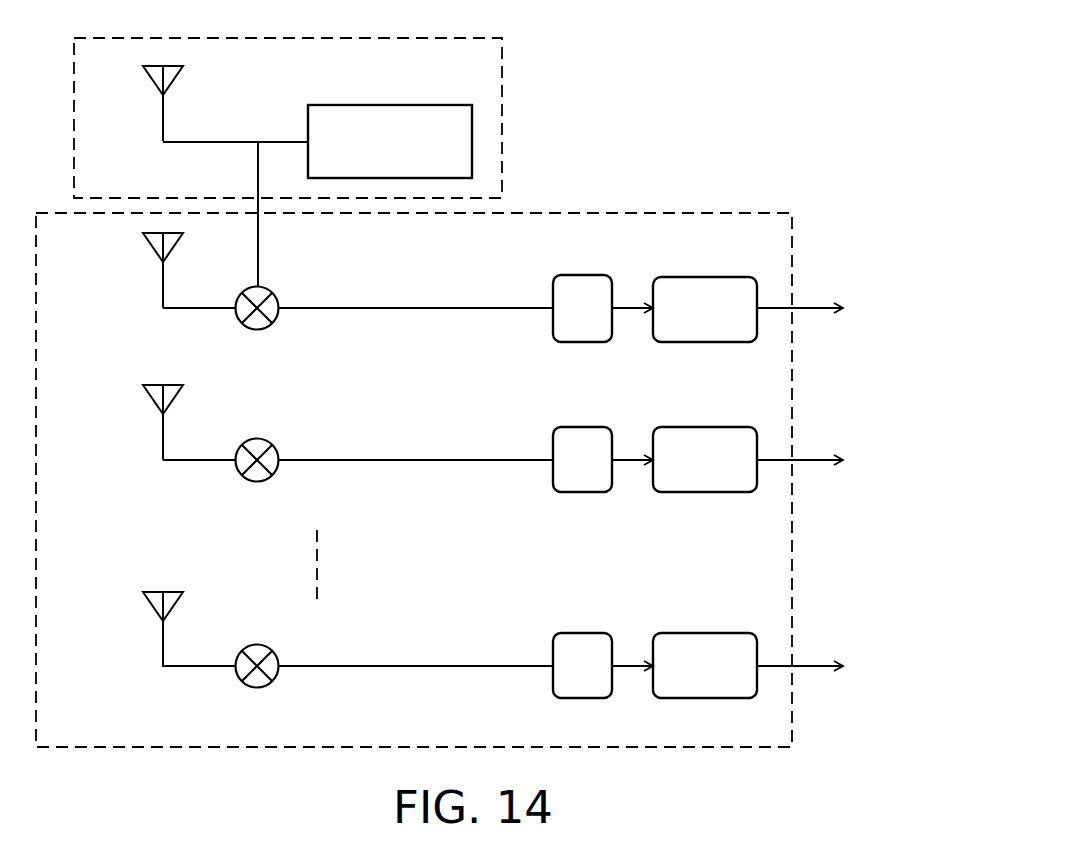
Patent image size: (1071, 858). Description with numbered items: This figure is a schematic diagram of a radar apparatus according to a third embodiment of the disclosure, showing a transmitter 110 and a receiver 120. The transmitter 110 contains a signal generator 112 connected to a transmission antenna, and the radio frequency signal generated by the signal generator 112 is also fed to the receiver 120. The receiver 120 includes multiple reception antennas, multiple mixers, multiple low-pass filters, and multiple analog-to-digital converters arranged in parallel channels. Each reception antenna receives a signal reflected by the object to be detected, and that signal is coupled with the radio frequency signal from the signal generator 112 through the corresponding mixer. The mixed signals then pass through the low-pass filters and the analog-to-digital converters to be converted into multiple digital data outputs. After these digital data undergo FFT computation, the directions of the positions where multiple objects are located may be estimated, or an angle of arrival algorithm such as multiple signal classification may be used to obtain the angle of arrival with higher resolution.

The transmitter 110 is at (350, 162).
The signal generator 112 is at (352, 105).
The receiver 120 is at (703, 213).